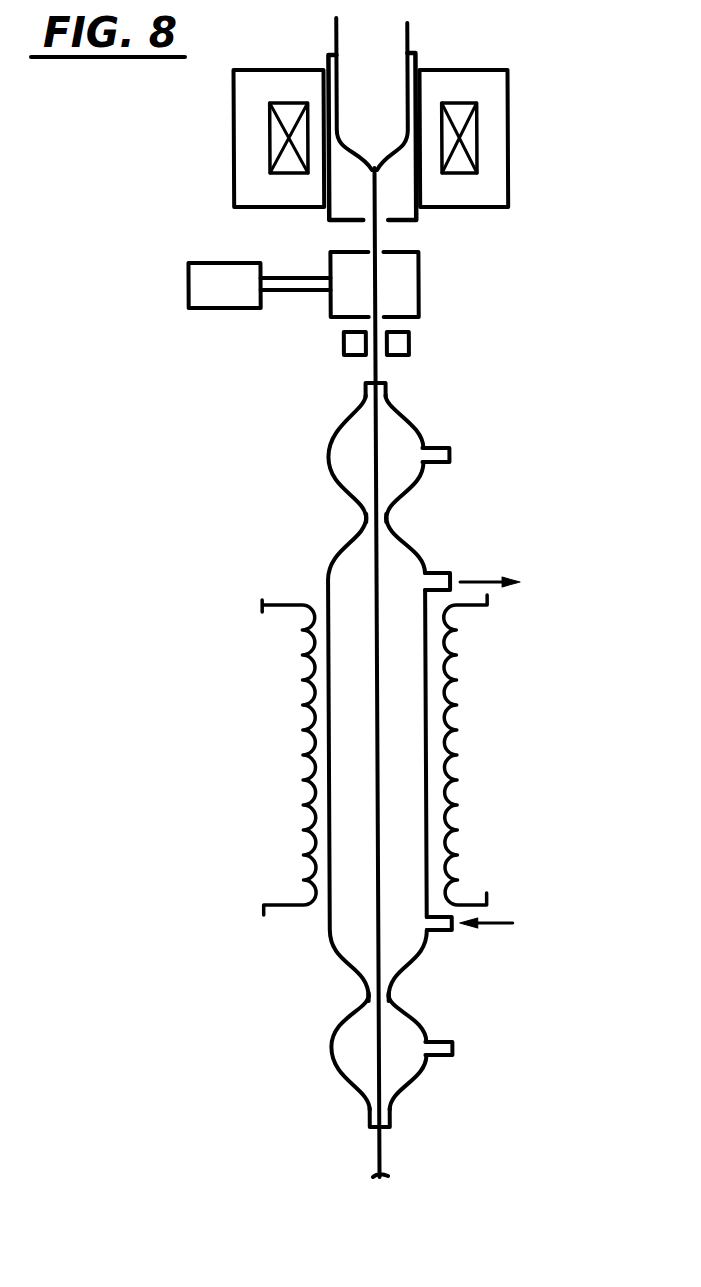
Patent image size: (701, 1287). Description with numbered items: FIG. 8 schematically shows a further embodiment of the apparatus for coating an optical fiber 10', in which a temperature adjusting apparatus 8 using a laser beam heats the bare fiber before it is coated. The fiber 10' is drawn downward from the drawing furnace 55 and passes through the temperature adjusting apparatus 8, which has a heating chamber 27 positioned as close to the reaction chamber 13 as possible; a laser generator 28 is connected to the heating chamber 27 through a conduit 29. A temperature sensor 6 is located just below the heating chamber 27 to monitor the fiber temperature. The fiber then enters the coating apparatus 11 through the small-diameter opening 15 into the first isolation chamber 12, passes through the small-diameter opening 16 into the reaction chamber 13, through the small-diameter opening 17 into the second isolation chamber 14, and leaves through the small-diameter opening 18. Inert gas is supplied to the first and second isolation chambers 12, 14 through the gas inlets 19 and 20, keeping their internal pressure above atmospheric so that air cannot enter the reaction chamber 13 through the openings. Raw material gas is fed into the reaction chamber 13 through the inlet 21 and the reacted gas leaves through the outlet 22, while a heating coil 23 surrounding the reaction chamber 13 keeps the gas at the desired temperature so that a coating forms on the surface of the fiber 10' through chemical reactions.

The optical fiber 10' is at (413, 597).
The drawing furnace 55 is at (507, 101).
The laser generator 28 is at (213, 270).
The conduit 29 is at (286, 277).
The heating chamber 27 is at (416, 270).
The temperature adjusting apparatus 8 is at (412, 302).
The temperature sensor 6 is at (343, 343).
The coating apparatus 11 is at (399, 756).
The small-diameter opening 15 is at (363, 391).
The first isolation chamber 12 is at (337, 446).
The gas inlet 19 is at (426, 446).
The small-diameter opening 16 is at (364, 517).
The reaction chamber 13 is at (336, 832).
The outlet 22 is at (444, 574).
The inlet 21 is at (431, 931).
The heating coil 23 is at (282, 613).
The small-diameter opening 17 is at (363, 993).
The second isolation chamber 14 is at (334, 1050).
The gas inlet 20 is at (427, 1058).
The small-diameter opening 18 is at (365, 1110).